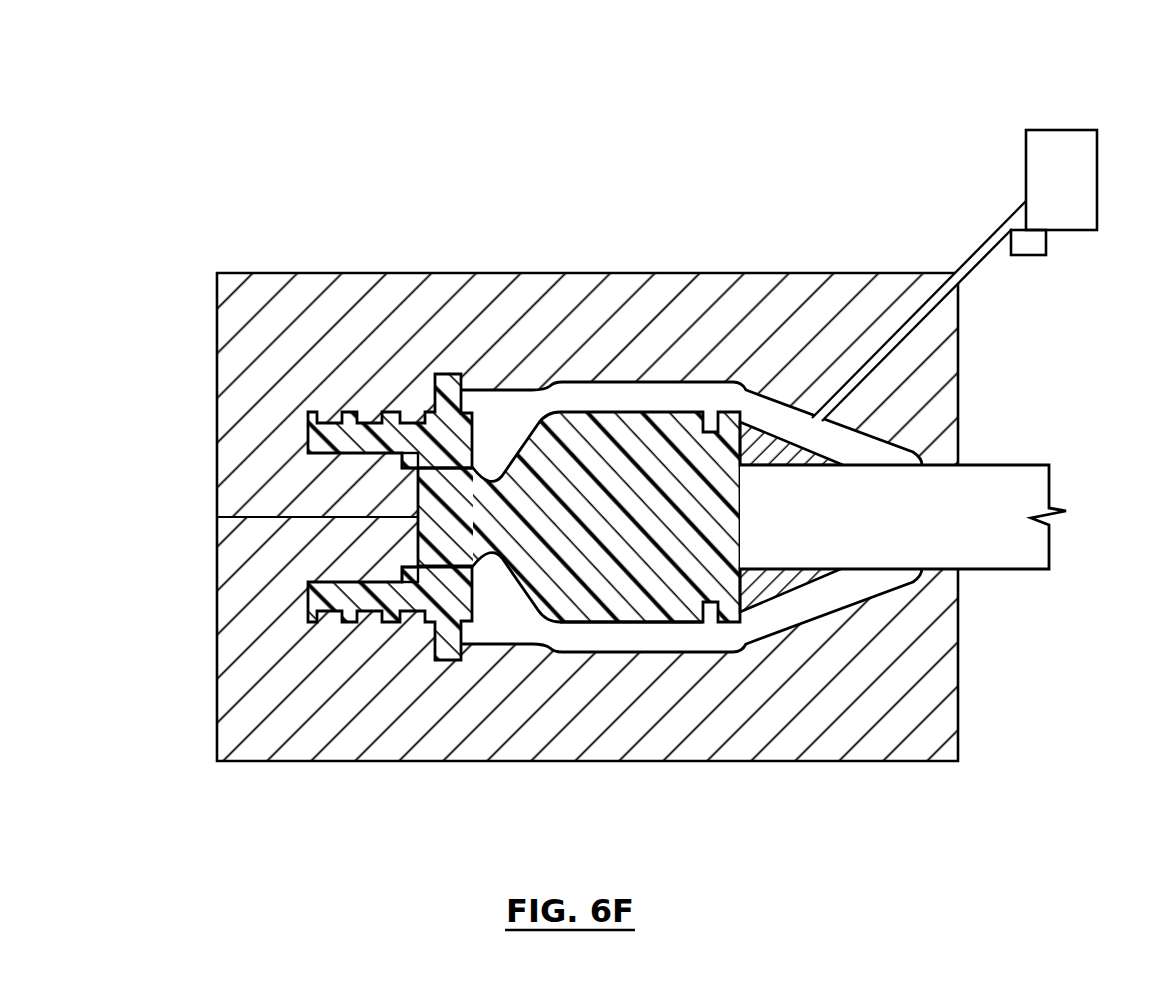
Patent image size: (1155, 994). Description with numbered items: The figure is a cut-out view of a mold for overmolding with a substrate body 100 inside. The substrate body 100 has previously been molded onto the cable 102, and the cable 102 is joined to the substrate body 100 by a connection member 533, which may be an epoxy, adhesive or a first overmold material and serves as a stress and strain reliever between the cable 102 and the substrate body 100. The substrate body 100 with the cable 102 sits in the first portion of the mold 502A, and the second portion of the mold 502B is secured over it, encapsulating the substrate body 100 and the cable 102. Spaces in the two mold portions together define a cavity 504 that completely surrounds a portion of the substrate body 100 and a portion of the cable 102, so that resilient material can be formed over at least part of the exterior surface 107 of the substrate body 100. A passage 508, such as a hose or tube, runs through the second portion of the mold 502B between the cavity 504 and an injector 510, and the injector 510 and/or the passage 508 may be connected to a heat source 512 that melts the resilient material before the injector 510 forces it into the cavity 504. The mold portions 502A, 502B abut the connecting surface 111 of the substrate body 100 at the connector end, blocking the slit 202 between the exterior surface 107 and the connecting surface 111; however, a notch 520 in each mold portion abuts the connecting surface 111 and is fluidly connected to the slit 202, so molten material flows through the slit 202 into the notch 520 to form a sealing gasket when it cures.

The substrate body 100 is at (622, 463).
The cable 102 is at (1003, 552).
The exterior surface 107 is at (610, 626).
The connecting surface 111 is at (424, 480).
The slit 202 is at (458, 457).
The first portion of the mold 502A is at (248, 623).
The second portion of the mold 502B is at (248, 390).
The cavity 504 is at (560, 635).
The passage 508 is at (997, 241).
The injector 510 is at (1063, 148).
The heat source 512 is at (1044, 243).
The notch 520 is at (412, 574).
The connection member 533 is at (783, 448).